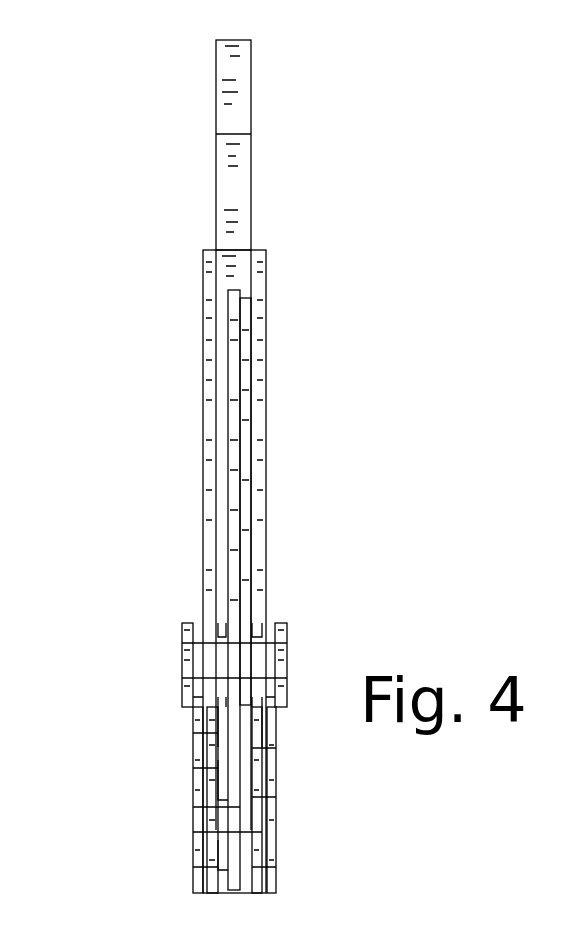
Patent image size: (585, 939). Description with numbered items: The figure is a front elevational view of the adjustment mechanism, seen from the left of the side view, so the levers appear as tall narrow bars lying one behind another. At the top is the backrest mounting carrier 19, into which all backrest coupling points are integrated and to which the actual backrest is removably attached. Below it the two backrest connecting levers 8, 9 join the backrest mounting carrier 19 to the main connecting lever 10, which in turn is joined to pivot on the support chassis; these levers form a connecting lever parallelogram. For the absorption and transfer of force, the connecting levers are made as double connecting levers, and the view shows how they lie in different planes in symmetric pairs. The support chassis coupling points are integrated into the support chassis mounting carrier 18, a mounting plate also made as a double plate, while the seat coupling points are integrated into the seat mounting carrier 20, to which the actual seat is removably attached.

The backrest connecting lever 8 is at (208, 313).
The backrest connecting lever 9 is at (233, 383).
The main connecting lever 10 is at (202, 806).
The support chassis mounting carrier 18 is at (288, 627).
The backrest mounting carrier 19 is at (250, 97).
The seat mounting carrier 20 is at (195, 818).